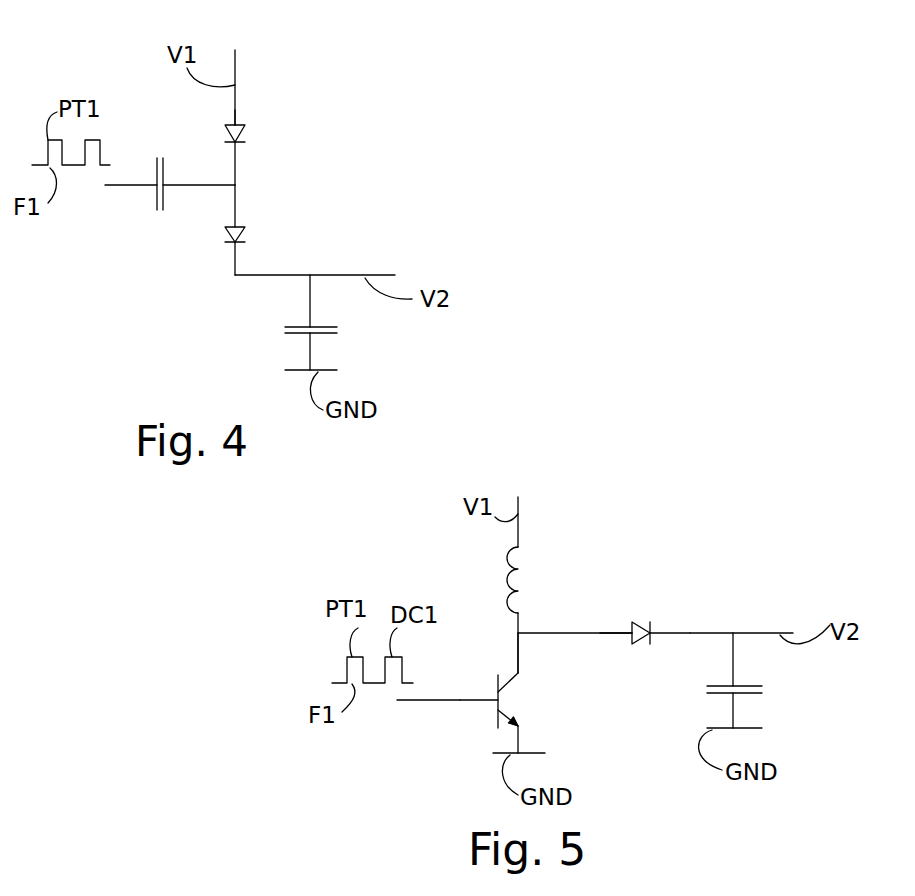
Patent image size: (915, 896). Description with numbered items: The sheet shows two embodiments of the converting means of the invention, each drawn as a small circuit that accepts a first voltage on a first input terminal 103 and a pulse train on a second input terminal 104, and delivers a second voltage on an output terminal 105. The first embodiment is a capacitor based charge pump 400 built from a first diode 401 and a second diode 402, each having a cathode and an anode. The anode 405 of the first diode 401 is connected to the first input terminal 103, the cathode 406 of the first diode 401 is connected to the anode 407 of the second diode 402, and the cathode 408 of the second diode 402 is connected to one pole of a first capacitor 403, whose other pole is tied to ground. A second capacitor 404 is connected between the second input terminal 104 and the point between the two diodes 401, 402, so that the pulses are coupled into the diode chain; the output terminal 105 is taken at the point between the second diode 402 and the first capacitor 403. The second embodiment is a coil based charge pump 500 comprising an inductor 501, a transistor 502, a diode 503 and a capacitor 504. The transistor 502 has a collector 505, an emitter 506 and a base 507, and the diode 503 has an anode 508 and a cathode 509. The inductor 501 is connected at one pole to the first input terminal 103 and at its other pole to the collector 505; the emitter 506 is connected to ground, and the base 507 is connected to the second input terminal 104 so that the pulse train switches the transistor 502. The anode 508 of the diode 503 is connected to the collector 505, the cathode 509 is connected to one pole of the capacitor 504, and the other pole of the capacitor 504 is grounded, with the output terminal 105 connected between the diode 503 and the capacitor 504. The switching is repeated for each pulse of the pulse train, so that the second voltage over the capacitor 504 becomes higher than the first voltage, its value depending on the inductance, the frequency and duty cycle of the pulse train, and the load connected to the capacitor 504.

In FIG. 4, the first input terminal 103 is at (236, 65).
In FIG. 5, the first input terminal 103 is at (519, 510).
In FIG. 4, the second input terminal 104 is at (107, 187).
In FIG. 5, the second input terminal 104 is at (400, 702).
In FIG. 4, the output terminal 105 is at (383, 275).
In FIG. 5, the output terminal 105 is at (770, 633).
In FIG. 4, the capacitor based charge pump 400 is at (438, 100).
In FIG. 4, the first diode 401 is at (246, 141).
In FIG. 4, the second diode 402 is at (246, 241).
In FIG. 4, the first capacitor 403 is at (323, 328).
In FIG. 4, the second capacitor 404 is at (162, 210).
In FIG. 4, the anode of the first diode 405 is at (238, 126).
In FIG. 4, the cathode of the first diode 406 is at (224, 142).
In FIG. 4, the anode of the second diode 407 is at (238, 227).
In FIG. 4, the cathode of the second diode 408 is at (240, 244).
In FIG. 5, the coil based charge pump 500 is at (670, 460).
In FIG. 5, the inductor 501 is at (516, 562).
In FIG. 5, the transistor 502 is at (488, 692).
In FIG. 5, the diode 503 is at (633, 628).
In FIG. 5, the capacitor 504 is at (750, 688).
In FIG. 5, the collector 505 is at (519, 682).
In FIG. 5, the emitter 506 is at (521, 732).
In FIG. 5, the base 507 is at (494, 704).
In FIG. 5, the anode 508 is at (633, 637).
In FIG. 5, the cathode 509 is at (652, 630).